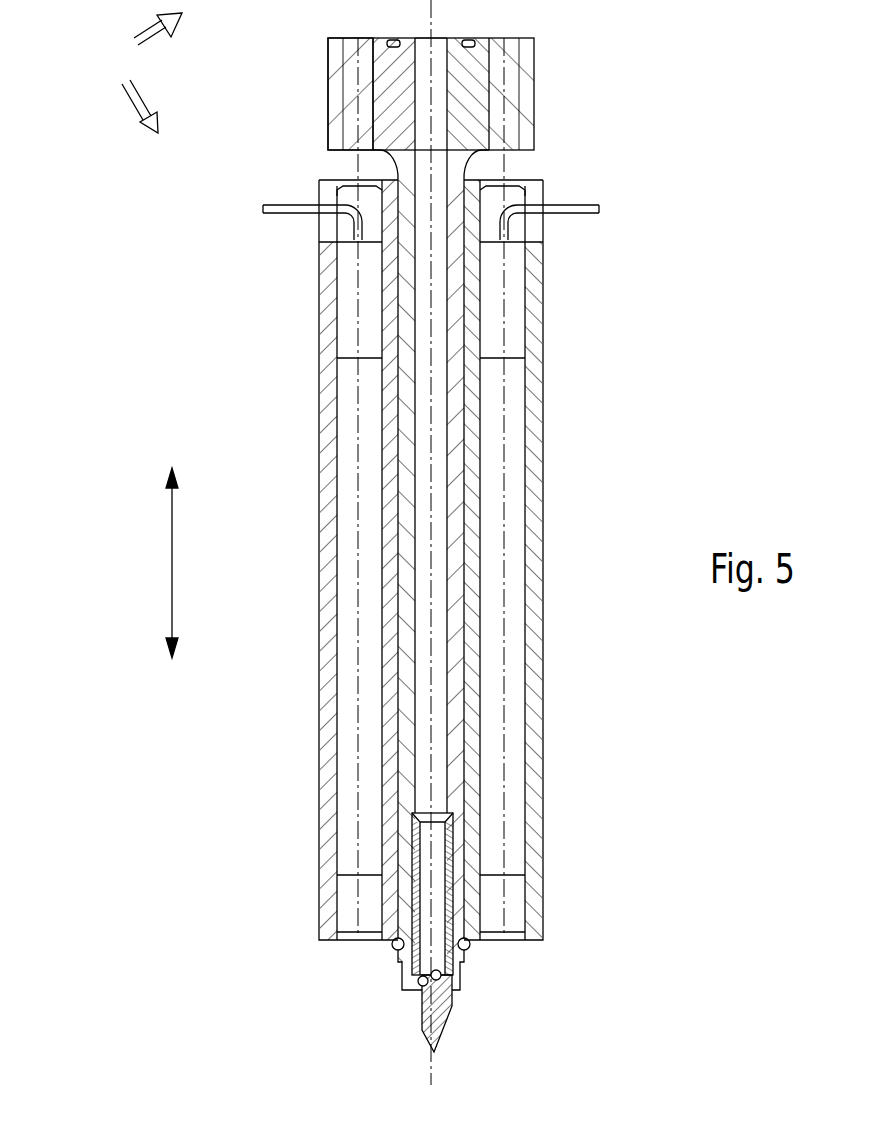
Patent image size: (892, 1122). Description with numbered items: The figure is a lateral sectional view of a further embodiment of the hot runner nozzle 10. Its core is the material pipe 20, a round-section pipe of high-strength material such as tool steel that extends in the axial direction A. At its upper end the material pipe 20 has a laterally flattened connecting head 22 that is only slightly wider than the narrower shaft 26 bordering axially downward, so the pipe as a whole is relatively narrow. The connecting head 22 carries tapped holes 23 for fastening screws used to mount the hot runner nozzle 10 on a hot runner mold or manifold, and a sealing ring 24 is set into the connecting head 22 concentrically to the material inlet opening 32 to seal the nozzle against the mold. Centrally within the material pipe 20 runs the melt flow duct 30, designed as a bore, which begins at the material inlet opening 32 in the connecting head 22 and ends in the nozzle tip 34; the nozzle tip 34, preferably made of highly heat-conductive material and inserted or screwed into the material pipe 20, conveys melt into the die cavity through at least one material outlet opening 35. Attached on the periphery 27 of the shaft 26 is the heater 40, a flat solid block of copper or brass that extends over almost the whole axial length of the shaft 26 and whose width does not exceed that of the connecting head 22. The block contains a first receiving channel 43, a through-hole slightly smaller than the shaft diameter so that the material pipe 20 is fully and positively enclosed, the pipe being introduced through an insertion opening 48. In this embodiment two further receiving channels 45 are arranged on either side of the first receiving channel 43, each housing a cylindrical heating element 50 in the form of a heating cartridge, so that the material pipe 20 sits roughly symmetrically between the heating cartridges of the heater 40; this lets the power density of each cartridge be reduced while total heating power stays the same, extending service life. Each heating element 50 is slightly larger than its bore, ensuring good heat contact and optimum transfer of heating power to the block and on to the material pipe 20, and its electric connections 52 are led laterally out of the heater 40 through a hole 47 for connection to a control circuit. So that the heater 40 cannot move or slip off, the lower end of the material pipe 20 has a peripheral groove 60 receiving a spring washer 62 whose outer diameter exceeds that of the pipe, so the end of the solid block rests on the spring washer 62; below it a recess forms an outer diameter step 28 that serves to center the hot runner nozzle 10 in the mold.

The hot runner nozzle 10 is at (137, 73).
The material pipe 20 is at (384, 577).
The connecting head 22 is at (470, 110).
The tapped hole 23 is at (353, 70).
The sealing ring 24 is at (470, 47).
The shaft 26 is at (407, 618).
The periphery 27 is at (397, 695).
The outer diameter step 28 is at (465, 977).
The melt flow duct 30 is at (438, 710).
The material inlet opening 32 is at (447, 38).
The nozzle tip 34 is at (443, 1015).
The material outlet opening 35 is at (422, 992).
The heater 40 is at (306, 328).
The first receiving channel 43 is at (462, 577).
The further receiving channel 45 is at (522, 473).
The hole 47 is at (533, 193).
The insertion opening 48 is at (338, 180).
The heating element 50 is at (512, 405).
The electric connection 52 is at (587, 210).
The peripheral groove 60 is at (400, 948).
The spring washer 62 is at (470, 943).
The axial direction A is at (168, 518).